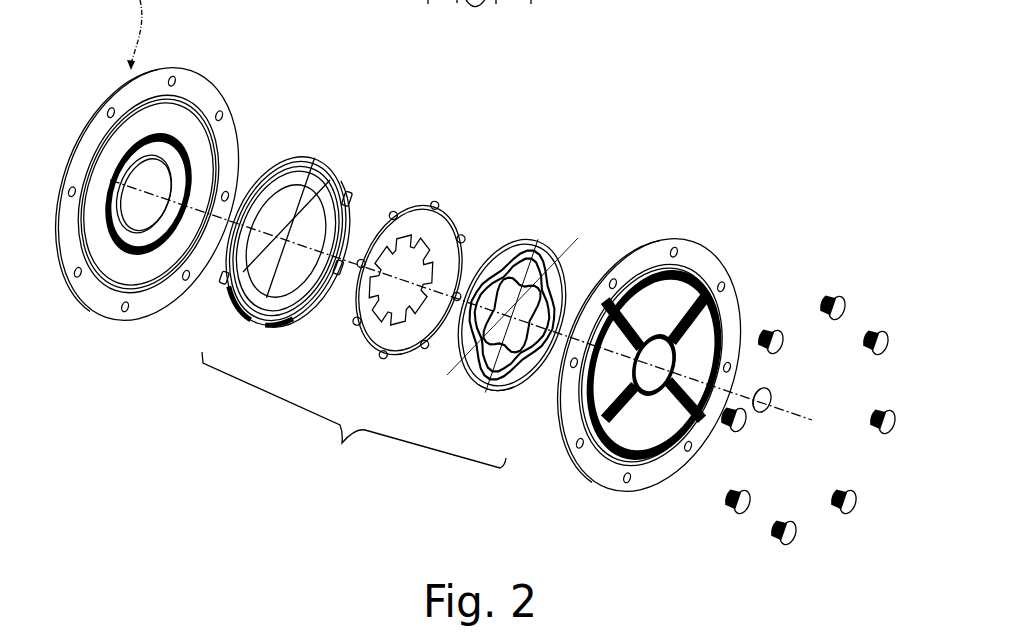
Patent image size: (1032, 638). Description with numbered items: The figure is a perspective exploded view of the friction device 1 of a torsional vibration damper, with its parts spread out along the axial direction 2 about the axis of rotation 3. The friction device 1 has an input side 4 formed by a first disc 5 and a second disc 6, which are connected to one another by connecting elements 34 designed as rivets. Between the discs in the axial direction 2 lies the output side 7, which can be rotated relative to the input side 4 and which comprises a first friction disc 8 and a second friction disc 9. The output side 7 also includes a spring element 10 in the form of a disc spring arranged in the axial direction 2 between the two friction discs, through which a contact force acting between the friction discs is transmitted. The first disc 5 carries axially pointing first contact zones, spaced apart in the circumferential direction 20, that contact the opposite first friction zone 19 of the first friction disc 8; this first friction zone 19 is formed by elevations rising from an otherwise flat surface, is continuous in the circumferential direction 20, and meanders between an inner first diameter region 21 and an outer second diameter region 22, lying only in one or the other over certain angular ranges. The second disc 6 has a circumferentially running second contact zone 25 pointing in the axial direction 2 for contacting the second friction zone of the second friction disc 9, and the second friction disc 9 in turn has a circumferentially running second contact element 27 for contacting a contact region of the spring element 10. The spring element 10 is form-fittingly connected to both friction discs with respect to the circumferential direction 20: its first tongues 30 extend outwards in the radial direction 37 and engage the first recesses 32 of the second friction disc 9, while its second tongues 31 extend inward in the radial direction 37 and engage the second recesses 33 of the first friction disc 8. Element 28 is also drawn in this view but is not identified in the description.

The friction device 1 is at (621, 167).
The axial direction 2 is at (820, 424).
The axis of rotation 3 is at (784, 410).
The input side 4 is at (675, 350).
The first disc 5 is at (756, 251).
The second disc 6 is at (197, 86).
The output side 7 is at (354, 417).
The first friction disc 8 is at (551, 280).
The second friction disc 9 is at (313, 180).
The spring element 10 is at (434, 215).
The first friction zone 19 is at (570, 268).
The circumferential direction 20 is at (763, 394).
The inner first diameter region 21 is at (503, 263).
The outer second diameter region 22 is at (503, 290).
The second contact zone 25 is at (107, 268).
The second contact element 27 is at (343, 181).
The outer ring 28 is at (287, 182).
The first tongues 30 is at (418, 202).
The second tongues 31 is at (395, 323).
The first recesses 32 is at (301, 160).
The second recesses 33 is at (531, 383).
The connecting elements 34 is at (779, 333).
The radial direction 37 is at (224, 286).